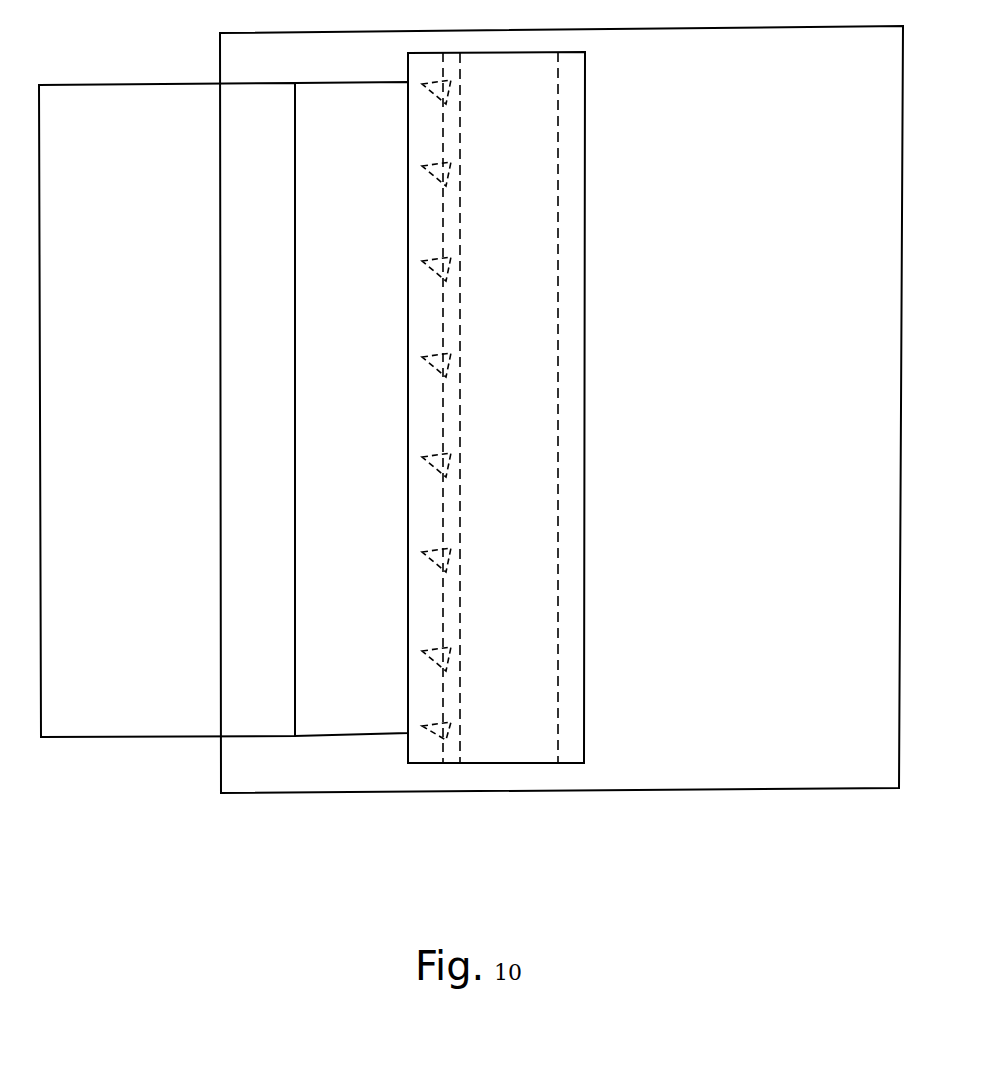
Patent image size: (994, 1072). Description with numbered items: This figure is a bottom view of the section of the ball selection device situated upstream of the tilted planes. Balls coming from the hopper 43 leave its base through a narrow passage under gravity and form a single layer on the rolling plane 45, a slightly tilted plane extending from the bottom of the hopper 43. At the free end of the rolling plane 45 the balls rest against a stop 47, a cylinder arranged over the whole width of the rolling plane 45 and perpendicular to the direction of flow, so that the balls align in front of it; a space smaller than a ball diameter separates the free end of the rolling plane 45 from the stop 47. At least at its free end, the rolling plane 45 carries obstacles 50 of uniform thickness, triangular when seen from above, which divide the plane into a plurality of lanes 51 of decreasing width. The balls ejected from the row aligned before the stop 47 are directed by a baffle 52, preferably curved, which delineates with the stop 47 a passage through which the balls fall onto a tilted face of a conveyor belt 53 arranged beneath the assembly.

The hopper 43 is at (112, 722).
The rolling plane 45 is at (355, 713).
The stop 47 is at (502, 750).
The obstacles 50 is at (437, 258).
The lanes 51 is at (423, 312).
The baffle 52 is at (570, 750).
The conveyor belt 53 is at (762, 768).